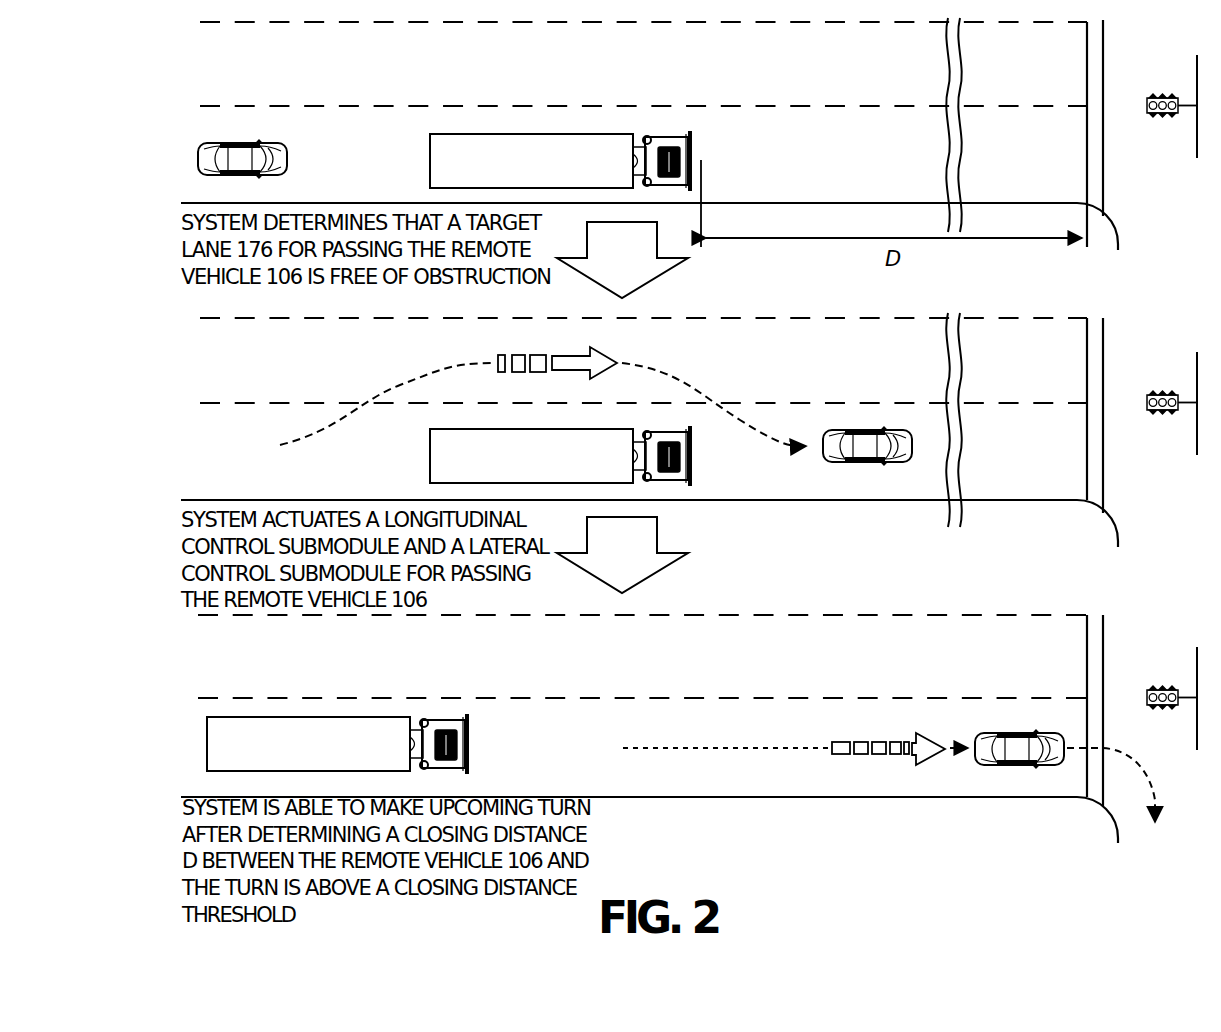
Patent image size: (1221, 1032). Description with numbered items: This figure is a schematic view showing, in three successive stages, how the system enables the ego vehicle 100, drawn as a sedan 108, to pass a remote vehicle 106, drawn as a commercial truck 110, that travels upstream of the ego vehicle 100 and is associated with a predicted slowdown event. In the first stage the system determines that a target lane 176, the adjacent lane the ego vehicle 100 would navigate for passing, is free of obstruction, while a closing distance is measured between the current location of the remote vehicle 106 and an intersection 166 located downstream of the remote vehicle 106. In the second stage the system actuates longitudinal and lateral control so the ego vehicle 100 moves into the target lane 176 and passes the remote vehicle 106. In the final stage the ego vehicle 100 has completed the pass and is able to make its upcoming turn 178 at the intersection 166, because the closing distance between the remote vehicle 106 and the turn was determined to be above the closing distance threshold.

The ego vehicle 100 is at (600, 418).
The sedan 108 is at (186, 148).
The remote vehicle 106 is at (416, 443).
The commercial truck 110 is at (426, 170).
The target lane 176 is at (579, 74).
The intersection 166 is at (1154, 82).
The upcoming turn 178 is at (1155, 785).